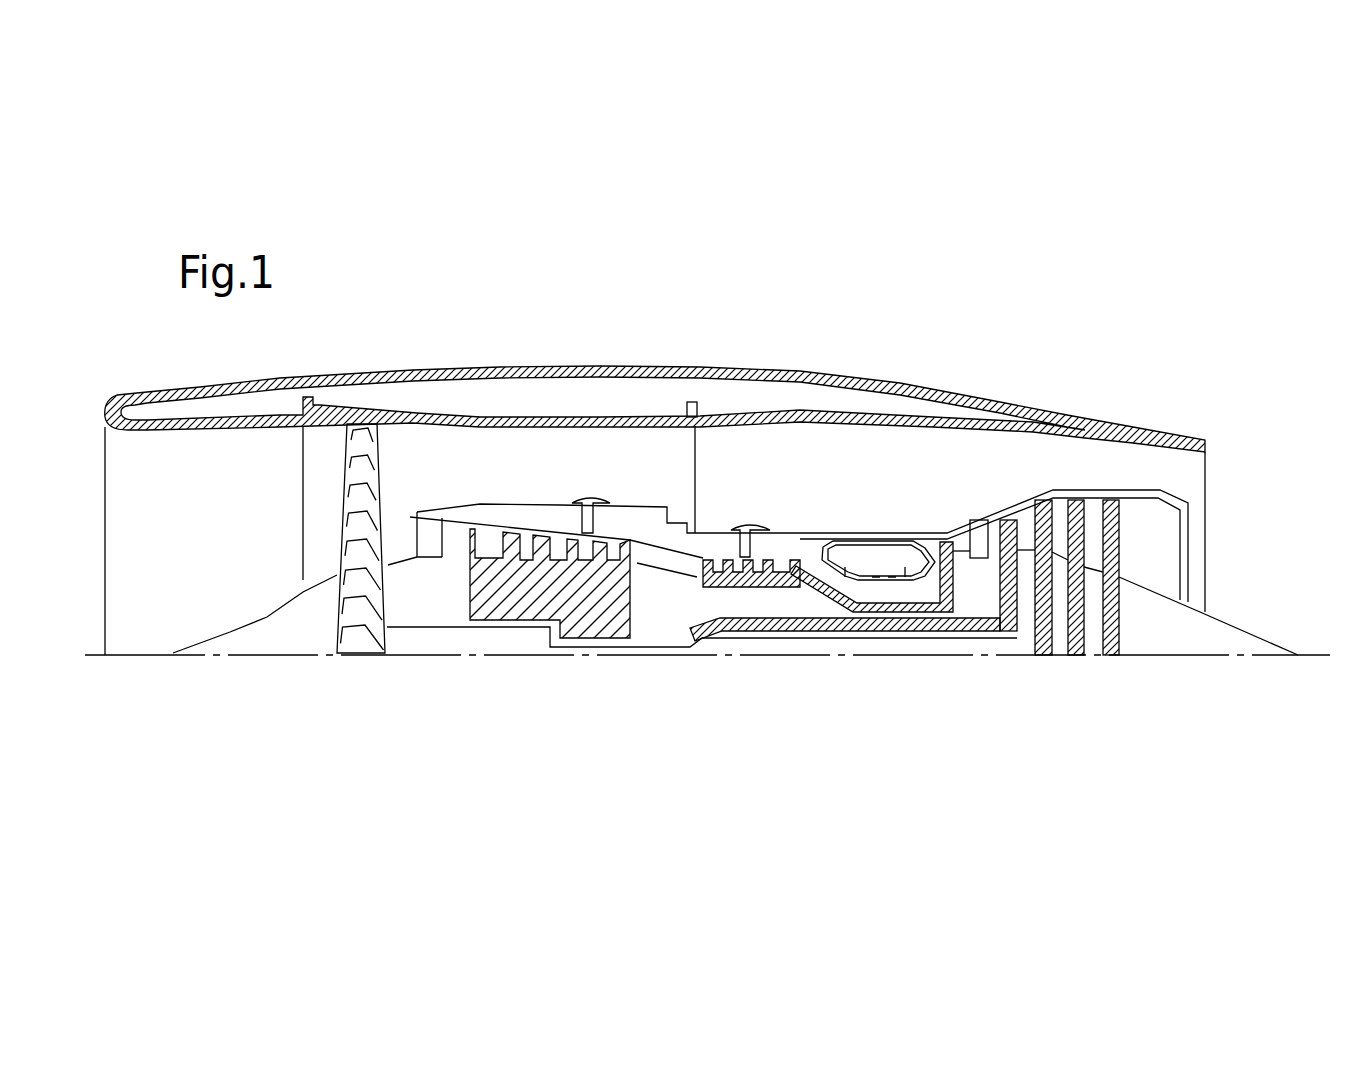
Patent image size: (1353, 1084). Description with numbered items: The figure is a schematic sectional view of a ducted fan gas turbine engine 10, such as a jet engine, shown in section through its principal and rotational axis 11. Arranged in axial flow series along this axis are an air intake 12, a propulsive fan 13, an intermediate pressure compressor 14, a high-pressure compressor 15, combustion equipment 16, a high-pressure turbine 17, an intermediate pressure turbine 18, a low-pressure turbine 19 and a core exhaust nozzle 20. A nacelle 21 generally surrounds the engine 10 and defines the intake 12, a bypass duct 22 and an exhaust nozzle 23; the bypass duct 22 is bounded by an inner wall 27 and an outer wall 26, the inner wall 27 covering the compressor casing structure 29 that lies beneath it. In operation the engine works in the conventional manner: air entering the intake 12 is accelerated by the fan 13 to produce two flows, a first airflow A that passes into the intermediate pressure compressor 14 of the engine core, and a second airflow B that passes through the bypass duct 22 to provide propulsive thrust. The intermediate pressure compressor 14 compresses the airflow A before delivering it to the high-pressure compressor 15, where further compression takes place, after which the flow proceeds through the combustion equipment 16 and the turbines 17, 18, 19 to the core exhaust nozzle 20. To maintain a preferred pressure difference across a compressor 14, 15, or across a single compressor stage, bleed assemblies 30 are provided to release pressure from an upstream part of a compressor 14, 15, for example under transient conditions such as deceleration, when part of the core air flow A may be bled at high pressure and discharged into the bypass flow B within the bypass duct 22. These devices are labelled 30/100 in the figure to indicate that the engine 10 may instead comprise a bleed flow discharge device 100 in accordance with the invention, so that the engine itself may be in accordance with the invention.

The gas turbine engine 10 is at (218, 672).
The principal and rotational axis 11 is at (1250, 670).
The air intake 12 is at (128, 430).
The propulsive fan 13 is at (335, 483).
The intermediate pressure compressor 14 is at (467, 532).
The high-pressure compressor 15 is at (700, 570).
The combustion equipment 16 is at (853, 558).
The high-pressure turbine 17 is at (987, 527).
The intermediate pressure turbine 18 is at (1017, 517).
The low-pressure turbine 19 is at (1112, 528).
The core exhaust nozzle 20 is at (1183, 498).
The nacelle 21 is at (160, 380).
The bypass duct 22 is at (454, 487).
The exhaust nozzle 23 is at (1190, 438).
The outer wall 26 is at (538, 417).
The inner wall 27 is at (830, 533).
The compressor casing structure 29 is at (657, 545).
The bleed assembly 30 is at (588, 495).
The bleed flow discharge device 100 is at (760, 527).
The first airflow A is at (412, 537).
The second airflow B is at (408, 455).